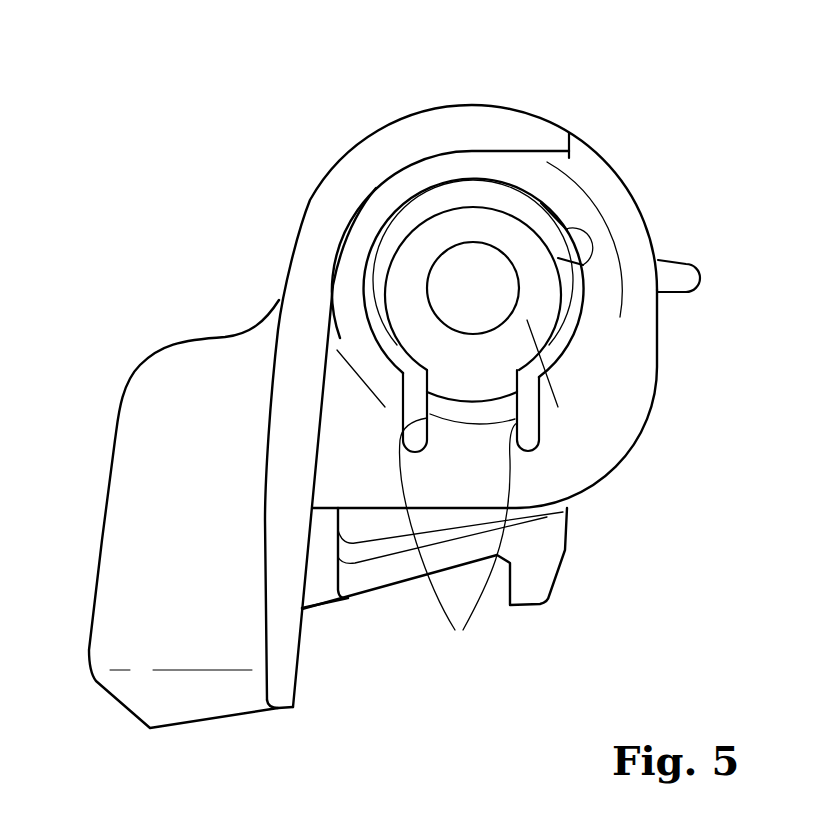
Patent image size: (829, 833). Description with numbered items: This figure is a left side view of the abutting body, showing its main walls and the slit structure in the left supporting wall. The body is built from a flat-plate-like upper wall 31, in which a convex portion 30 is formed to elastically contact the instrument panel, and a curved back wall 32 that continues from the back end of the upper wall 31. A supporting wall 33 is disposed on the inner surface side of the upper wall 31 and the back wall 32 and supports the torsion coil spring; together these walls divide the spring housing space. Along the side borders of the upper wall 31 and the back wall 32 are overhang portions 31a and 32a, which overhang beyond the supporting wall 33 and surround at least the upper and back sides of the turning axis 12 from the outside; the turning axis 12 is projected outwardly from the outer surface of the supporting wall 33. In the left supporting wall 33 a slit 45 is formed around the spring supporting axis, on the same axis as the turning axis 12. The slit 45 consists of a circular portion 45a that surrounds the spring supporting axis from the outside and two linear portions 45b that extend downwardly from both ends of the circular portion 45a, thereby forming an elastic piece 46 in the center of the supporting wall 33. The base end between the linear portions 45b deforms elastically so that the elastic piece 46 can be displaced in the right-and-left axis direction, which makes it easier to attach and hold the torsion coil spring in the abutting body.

The turning axis 12 is at (450, 282).
The convex portion 30 is at (140, 533).
The upper wall 31 is at (291, 259).
The overhang portion 31a is at (283, 562).
The back wall 32 is at (483, 106).
The overhang portion 32a is at (448, 123).
The supporting wall 33 is at (606, 430).
The slit 45 is at (376, 237).
The circular portion 45a is at (583, 280).
The linear portion 45b is at (455, 630).
The elastic piece 46 is at (538, 378).